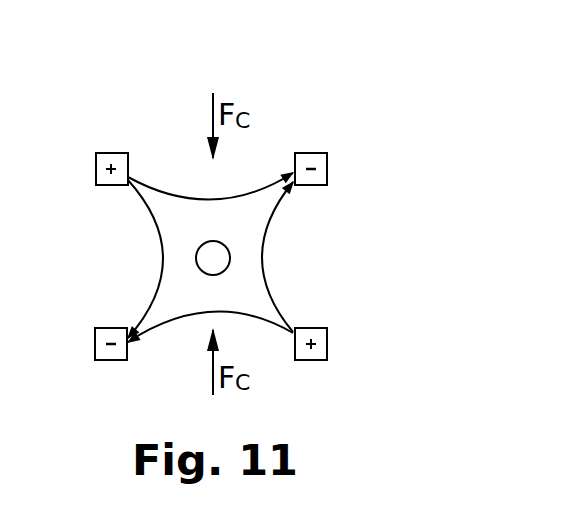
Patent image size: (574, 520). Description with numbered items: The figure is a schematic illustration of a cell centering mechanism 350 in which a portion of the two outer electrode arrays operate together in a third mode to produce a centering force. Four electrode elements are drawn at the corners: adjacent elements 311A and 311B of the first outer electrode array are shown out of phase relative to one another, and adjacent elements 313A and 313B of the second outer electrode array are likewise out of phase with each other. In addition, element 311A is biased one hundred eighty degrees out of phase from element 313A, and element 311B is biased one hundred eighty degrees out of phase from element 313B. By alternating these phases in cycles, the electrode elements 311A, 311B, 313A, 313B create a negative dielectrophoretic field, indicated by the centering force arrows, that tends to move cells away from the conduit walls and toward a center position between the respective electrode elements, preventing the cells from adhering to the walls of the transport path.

The four-electrode sensing element (bridge body) 350 is at (380, 184).
The element of electrode array 311A is at (112, 152).
The element of electrode array 311B is at (312, 152).
The element of electrode array 313A is at (108, 361).
The element of electrode array 313B is at (311, 361).